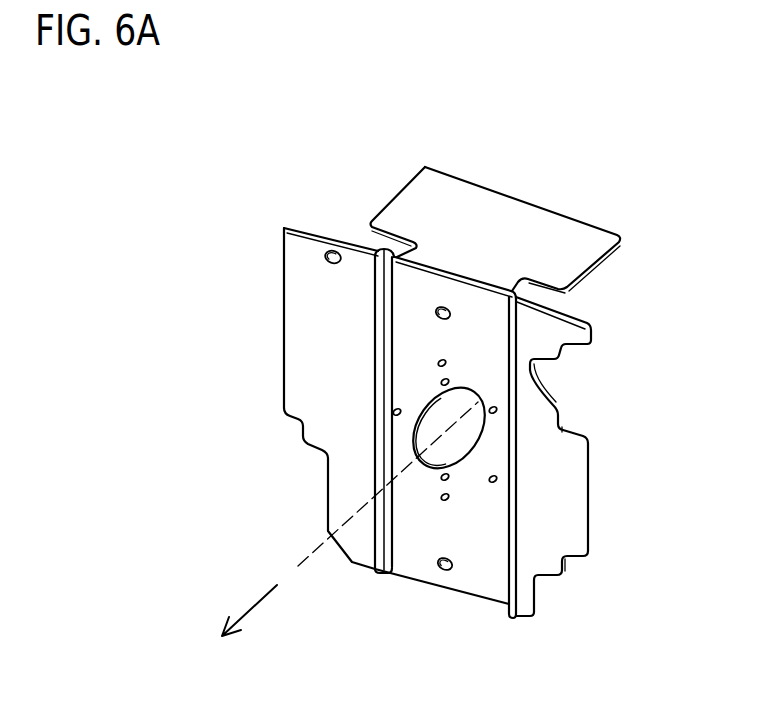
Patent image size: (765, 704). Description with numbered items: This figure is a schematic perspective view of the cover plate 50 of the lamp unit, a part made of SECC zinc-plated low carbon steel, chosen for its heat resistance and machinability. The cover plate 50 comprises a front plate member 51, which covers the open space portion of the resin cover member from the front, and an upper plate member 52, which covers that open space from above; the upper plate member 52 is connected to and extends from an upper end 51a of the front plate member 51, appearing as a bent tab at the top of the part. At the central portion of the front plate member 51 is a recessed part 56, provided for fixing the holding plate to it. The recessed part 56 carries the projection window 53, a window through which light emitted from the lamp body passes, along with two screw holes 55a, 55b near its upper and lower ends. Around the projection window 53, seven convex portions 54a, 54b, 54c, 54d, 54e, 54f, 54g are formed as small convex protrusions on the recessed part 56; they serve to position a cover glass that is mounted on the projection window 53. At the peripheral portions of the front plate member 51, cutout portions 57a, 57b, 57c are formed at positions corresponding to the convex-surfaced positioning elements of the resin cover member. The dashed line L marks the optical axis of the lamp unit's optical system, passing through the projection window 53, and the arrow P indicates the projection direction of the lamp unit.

The cover plate 50 is at (460, 91).
The front plate member 51 is at (303, 265).
The upper end of the front plate member 51a is at (448, 270).
The upper plate member 52 is at (507, 225).
The projection window 53 is at (415, 400).
The convex portion 54a is at (438, 362).
The convex portion 54b is at (441, 381).
The convex portion 54c is at (450, 477).
The convex portion 54d is at (450, 497).
The convex portion 54e is at (498, 409).
The convex portion 54f is at (393, 413).
The convex portion 54g is at (498, 478).
The screw hole 55a is at (452, 317).
The screw hole 55b is at (442, 567).
The recessed part 56 is at (490, 577).
The cutout portion 57a is at (538, 382).
The cutout portion 57b is at (303, 433).
The cutout portion 57c is at (555, 573).
The optical axis line L is at (318, 547).
The projection direction arrow P is at (249, 605).